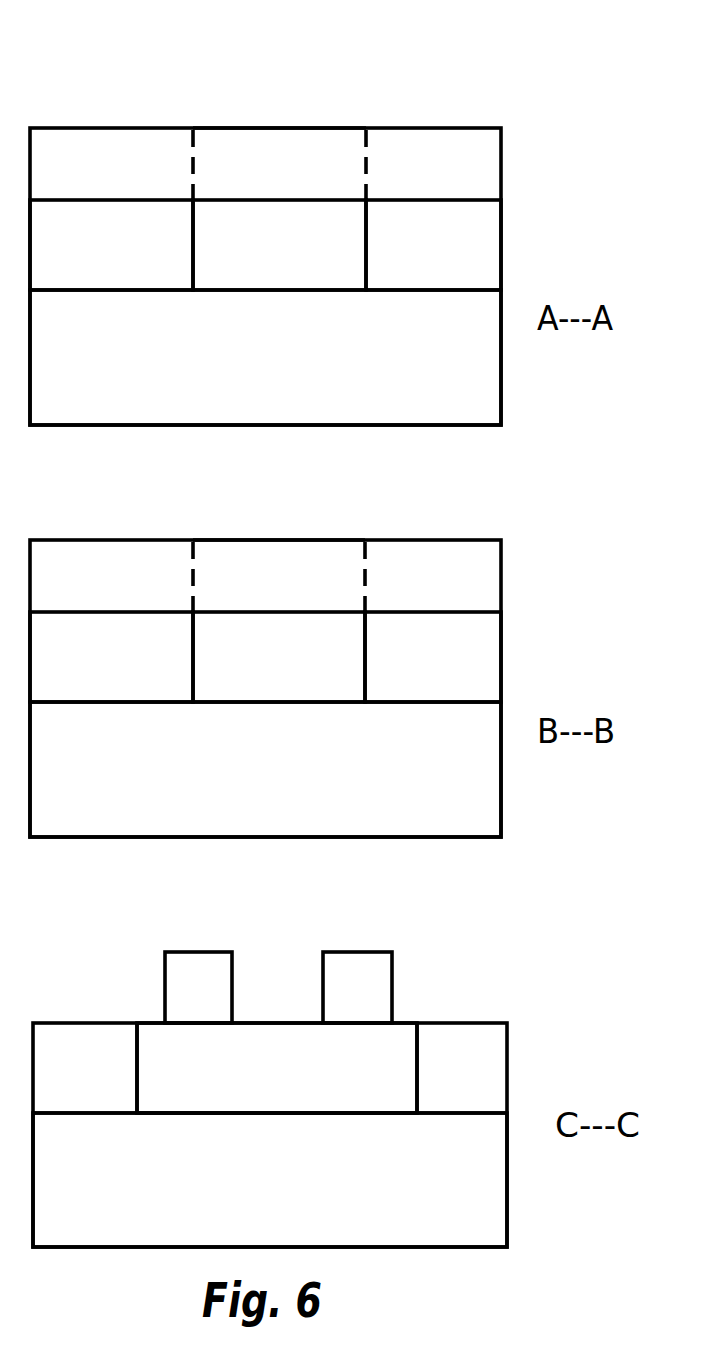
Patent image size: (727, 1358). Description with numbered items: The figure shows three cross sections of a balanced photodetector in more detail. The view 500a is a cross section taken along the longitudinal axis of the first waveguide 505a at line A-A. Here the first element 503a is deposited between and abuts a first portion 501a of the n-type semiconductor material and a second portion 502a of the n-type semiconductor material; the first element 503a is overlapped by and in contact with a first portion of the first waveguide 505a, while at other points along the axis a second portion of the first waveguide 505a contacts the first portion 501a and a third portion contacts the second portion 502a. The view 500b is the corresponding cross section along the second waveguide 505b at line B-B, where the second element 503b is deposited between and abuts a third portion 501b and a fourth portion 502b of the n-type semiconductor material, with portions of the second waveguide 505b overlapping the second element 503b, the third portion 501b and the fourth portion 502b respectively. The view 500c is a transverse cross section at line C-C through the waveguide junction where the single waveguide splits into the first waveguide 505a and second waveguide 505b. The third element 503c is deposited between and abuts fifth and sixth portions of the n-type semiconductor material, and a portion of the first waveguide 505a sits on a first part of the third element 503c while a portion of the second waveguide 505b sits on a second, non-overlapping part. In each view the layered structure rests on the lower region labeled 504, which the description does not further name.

The view 500a is at (122, 34).
The view 500b is at (122, 488).
The view 500c is at (122, 964).
The first portion of the n-type semiconductor material 501a is at (111, 245).
The second portion of the n-type semiconductor material 502a is at (433, 245).
The first element 503a is at (279, 245).
The third portion of the n-type semiconductor material 501b is at (111, 657).
The fourth portion of the n-type semiconductor material 502b is at (433, 657).
The second element 503b is at (279, 657).
The third element 503c is at (277, 1068).
The substrate 504 is at (268, 768).
The first waveguide 505a is at (293, 152).
The second waveguide 505b is at (290, 565).